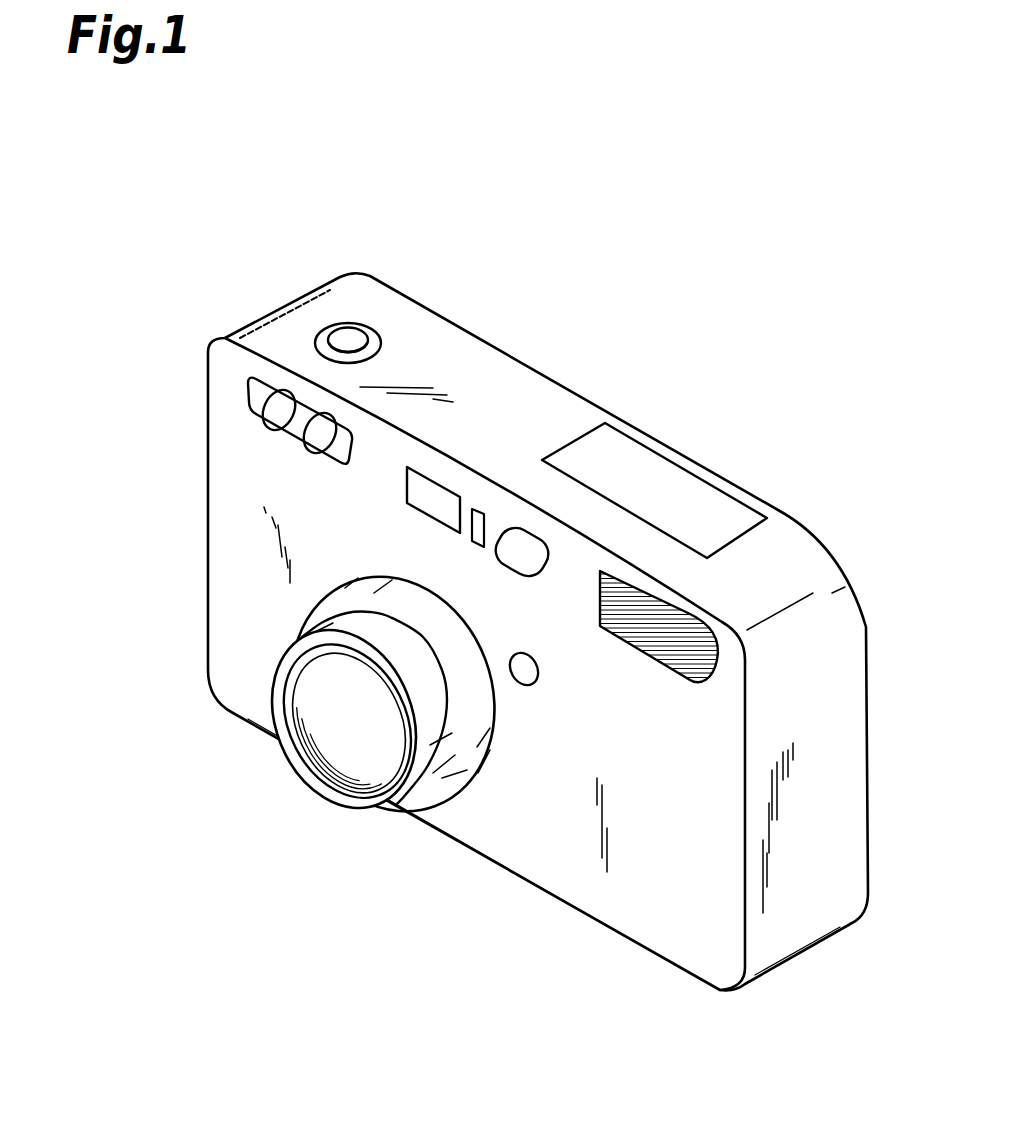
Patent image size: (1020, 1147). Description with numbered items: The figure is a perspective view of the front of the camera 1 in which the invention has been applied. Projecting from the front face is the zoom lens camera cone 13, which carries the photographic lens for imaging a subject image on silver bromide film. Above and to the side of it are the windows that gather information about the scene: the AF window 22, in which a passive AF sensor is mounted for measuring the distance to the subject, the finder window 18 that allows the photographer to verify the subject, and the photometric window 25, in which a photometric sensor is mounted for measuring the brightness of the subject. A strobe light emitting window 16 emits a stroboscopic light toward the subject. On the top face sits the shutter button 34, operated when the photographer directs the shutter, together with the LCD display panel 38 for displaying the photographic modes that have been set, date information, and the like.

The camera 1 is at (630, 386).
The zoom lens camera cone 13 is at (373, 762).
The strobe light emitting window 16 is at (688, 634).
The finder window 18 is at (440, 498).
The AF window 22 is at (295, 437).
The photometric window 25 is at (524, 678).
The shutter button 34 is at (348, 338).
The LCD display panel 38 is at (657, 490).